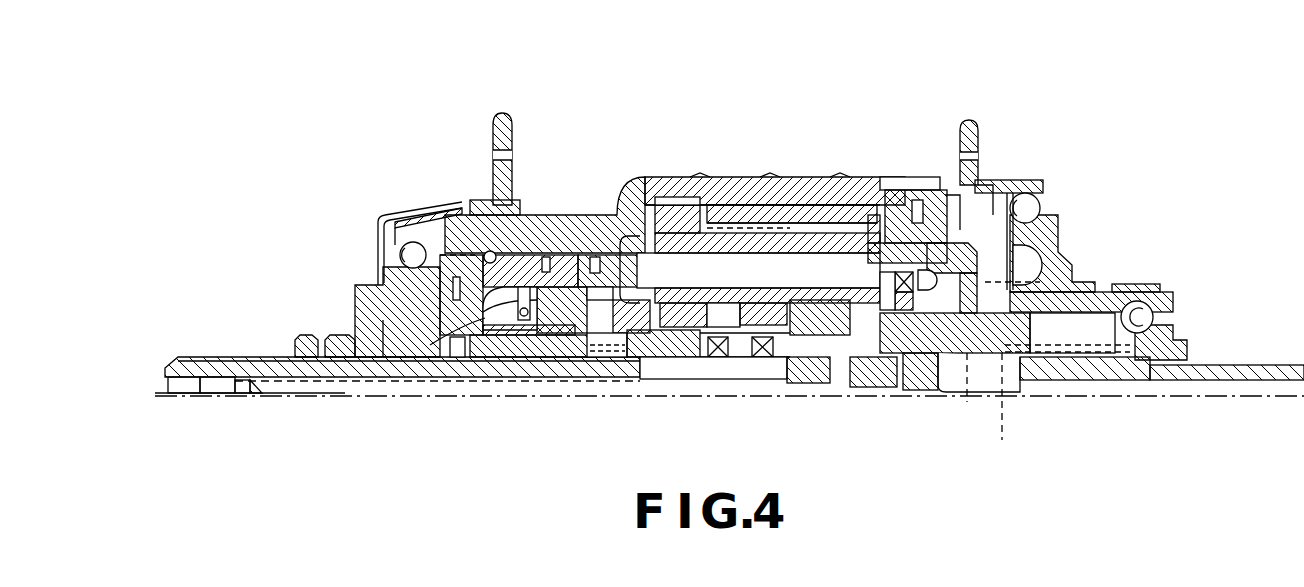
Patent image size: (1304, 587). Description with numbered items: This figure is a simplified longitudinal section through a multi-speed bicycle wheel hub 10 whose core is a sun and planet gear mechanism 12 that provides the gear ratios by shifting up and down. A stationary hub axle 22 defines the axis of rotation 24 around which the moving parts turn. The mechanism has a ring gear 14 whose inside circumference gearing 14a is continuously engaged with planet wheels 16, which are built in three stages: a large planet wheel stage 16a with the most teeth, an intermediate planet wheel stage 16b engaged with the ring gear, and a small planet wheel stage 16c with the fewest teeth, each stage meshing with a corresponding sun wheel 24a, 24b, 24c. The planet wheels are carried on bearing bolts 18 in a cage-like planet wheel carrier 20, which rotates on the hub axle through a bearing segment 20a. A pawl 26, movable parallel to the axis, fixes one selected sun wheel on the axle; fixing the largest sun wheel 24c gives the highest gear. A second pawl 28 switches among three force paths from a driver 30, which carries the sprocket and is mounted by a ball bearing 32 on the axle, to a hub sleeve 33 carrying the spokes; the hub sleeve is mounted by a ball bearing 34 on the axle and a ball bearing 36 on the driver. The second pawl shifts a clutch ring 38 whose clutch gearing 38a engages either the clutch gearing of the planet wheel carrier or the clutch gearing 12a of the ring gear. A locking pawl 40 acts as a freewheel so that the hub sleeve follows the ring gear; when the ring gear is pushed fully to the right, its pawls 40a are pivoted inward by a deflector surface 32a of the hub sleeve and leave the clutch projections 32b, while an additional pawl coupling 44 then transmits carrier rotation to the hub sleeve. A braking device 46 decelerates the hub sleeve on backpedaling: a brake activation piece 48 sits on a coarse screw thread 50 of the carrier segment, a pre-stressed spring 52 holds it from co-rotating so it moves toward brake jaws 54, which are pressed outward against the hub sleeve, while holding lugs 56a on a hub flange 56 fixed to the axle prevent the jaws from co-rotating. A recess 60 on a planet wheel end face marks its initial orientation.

The multi-speed bicycle wheel hub 10 is at (1078, 186).
The sun and planet gear mechanism 12 is at (835, 212).
The clutch gearing of the ring gear 12a is at (977, 267).
The ring gear 14 is at (760, 195).
The inside circumference gearing 14a is at (790, 235).
The planet wheels 16 is at (650, 215).
The large planet wheel stage 16a is at (675, 215).
The intermediate planet wheel stage 16b is at (730, 210).
The small planet wheel stage 16c is at (808, 205).
The bearing bolts 18 is at (600, 255).
The planet wheel carrier 20 is at (868, 200).
The bearing segment 20a is at (522, 345).
The hub axle 22 is at (262, 357).
The axis of rotation 24 is at (1248, 365).
The sun wheel 24a is at (680, 380).
The sun wheel 24b is at (755, 360).
The sun wheel 24c is at (790, 385).
The pawl 26 is at (815, 383).
The second pawl 28 is at (942, 392).
The driver 30 is at (1142, 292).
The ball bearing 32 is at (1150, 316).
The deflector surface 32a is at (978, 200).
The clutch projections 32b is at (878, 235).
The hub sleeve 33 is at (1025, 193).
The ball bearing 34 is at (405, 250).
The ball bearing 36 is at (1040, 185).
The clutch ring 38 is at (958, 360).
The clutch gearing 38a is at (1095, 380).
The locking pawl 40 is at (980, 185).
The pawls 40a is at (958, 195).
The additional pawl coupling 44 is at (565, 235).
The braking device 46 is at (458, 212).
The brake activation piece 48 is at (452, 340).
The coarse screw thread 50 is at (515, 357).
The pre-stressed spring 52 is at (405, 375).
The brake jaws 54 is at (452, 230).
The hub flange 56 is at (355, 285).
The holding lugs 56a is at (400, 218).
The recess 60 is at (620, 230).